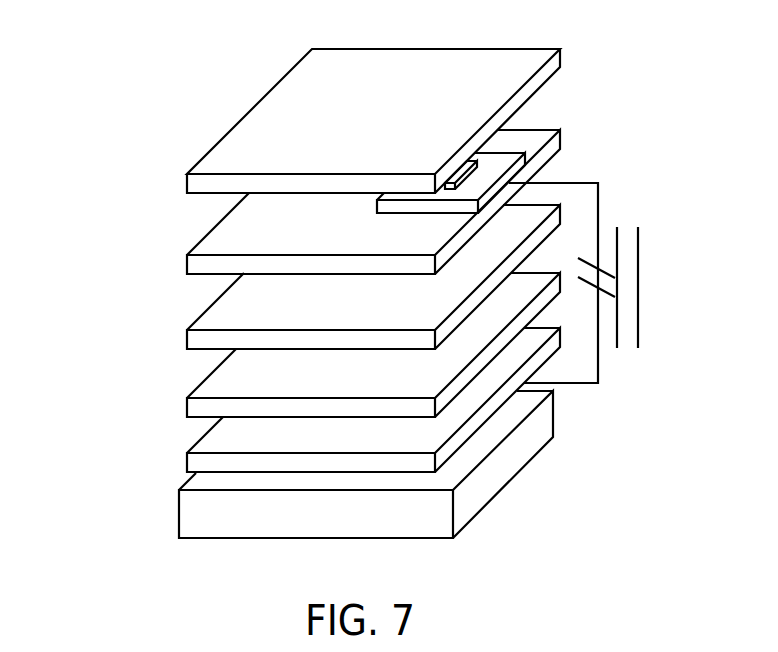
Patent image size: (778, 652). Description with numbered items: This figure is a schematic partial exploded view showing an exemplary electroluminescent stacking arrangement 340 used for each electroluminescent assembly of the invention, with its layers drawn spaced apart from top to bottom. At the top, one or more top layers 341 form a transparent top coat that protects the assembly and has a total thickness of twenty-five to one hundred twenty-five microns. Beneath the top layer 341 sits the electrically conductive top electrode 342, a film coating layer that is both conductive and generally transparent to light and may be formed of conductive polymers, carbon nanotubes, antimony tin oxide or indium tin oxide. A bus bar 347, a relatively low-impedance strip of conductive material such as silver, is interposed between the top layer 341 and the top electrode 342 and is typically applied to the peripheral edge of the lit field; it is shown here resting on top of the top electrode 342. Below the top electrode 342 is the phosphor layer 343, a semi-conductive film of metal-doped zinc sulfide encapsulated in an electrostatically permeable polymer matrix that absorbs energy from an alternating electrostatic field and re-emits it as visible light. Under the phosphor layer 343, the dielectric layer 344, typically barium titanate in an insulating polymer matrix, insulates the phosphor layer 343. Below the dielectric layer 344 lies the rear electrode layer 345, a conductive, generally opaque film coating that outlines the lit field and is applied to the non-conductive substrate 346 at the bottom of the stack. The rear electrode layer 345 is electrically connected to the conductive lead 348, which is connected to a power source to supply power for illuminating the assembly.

The electroluminescent stacking arrangement 340 is at (105, 68).
The top layer 341 is at (185, 188).
The top electrode 342 is at (186, 268).
The phosphor layer 343 is at (186, 344).
The dielectric layer 344 is at (186, 409).
The rear electrode layer 345 is at (186, 466).
The substrate 346 is at (180, 513).
The bus bar 347 is at (502, 157).
The conductive lead 348 is at (628, 282).